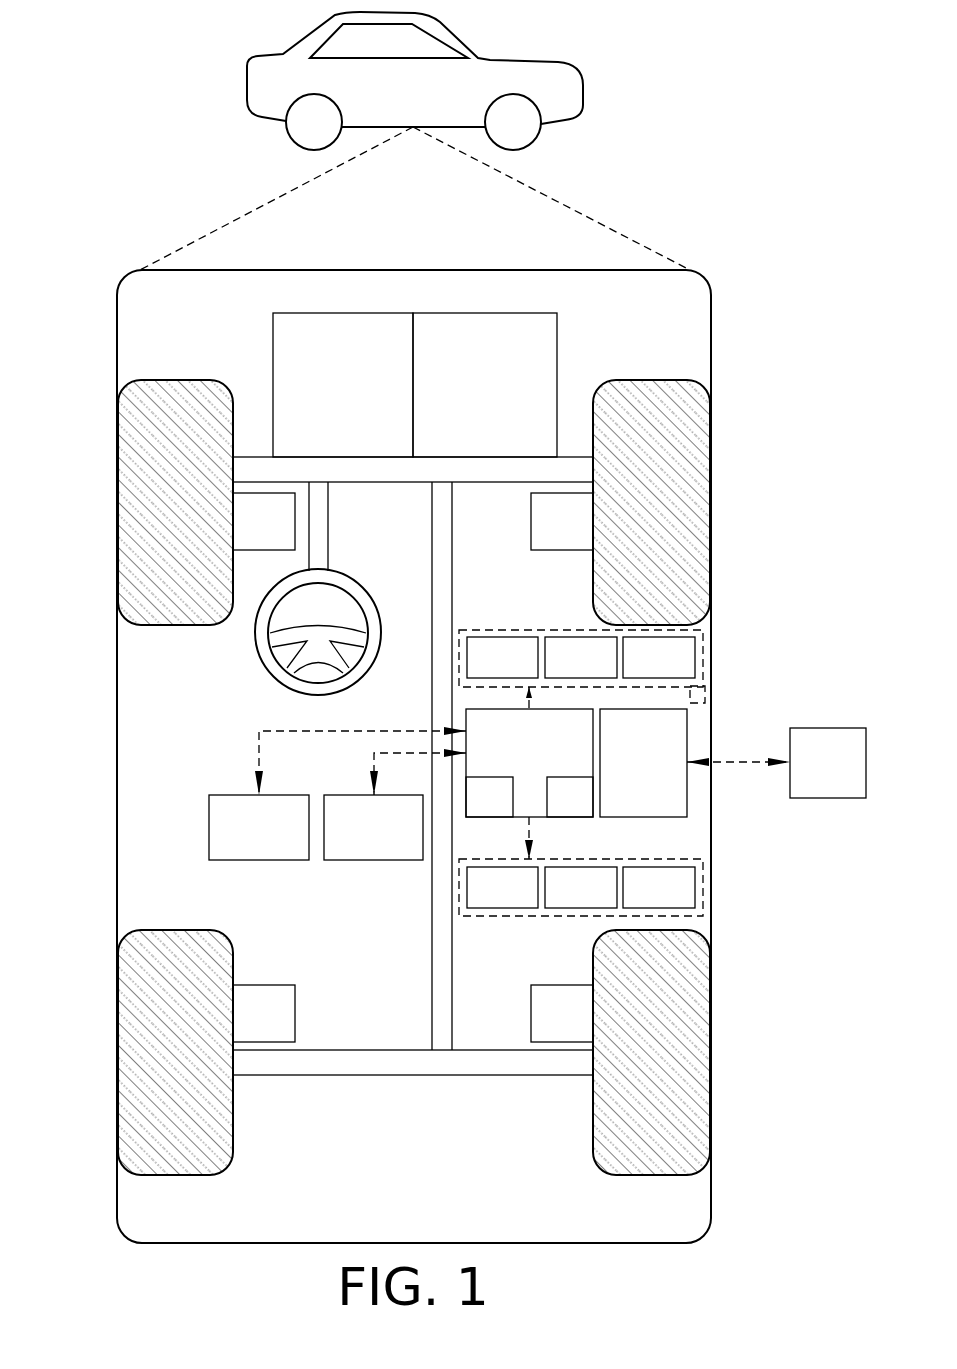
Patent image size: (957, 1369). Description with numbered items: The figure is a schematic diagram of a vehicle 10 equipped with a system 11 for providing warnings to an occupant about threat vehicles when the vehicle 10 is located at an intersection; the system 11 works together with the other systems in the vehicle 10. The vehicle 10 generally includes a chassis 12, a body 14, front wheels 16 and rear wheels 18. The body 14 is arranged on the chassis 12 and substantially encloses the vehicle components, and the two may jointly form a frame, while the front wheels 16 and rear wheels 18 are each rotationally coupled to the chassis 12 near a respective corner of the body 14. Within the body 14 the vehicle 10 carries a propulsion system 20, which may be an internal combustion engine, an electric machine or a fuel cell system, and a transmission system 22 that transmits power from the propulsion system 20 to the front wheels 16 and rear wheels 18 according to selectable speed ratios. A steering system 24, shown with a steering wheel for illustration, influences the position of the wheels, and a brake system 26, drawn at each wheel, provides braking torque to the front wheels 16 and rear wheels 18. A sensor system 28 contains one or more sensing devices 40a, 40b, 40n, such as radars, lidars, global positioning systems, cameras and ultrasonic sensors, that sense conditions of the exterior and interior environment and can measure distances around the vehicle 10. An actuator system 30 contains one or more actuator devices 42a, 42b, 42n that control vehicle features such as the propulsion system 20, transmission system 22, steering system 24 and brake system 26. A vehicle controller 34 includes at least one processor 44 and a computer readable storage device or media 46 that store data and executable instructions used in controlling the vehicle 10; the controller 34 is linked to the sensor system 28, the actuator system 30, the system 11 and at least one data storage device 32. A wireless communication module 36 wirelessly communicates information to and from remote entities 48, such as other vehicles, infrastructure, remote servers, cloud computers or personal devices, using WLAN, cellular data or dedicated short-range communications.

The vehicle 10 is at (397, 101).
The system 11 is at (243, 840).
The chassis 12 is at (432, 958).
The body 14 is at (117, 755).
The front wheels 16 is at (176, 380).
The rear wheels 18 is at (173, 1175).
The propulsion system 20 is at (327, 400).
The transmission system 22 is at (469, 400).
The steering system 24 is at (346, 521).
The brake system 26 is at (248, 534).
The sensor system 28 is at (581, 632).
The actuator system 30 is at (581, 911).
The data storage device 32 is at (358, 840).
The vehicle controller 34 is at (513, 758).
The wireless communication module 36 is at (627, 775).
The sensing device 40a is at (479, 671).
The sensing device 40b is at (557, 671).
The sensing device 40n is at (635, 671).
The actuator device 42a is at (479, 901).
The actuator device 42b is at (557, 901).
The actuator device 42n is at (635, 901).
The processor 44 is at (474, 810).
The computer readable storage device or media 46 is at (554, 810).
The remote entities 48 is at (812, 776).